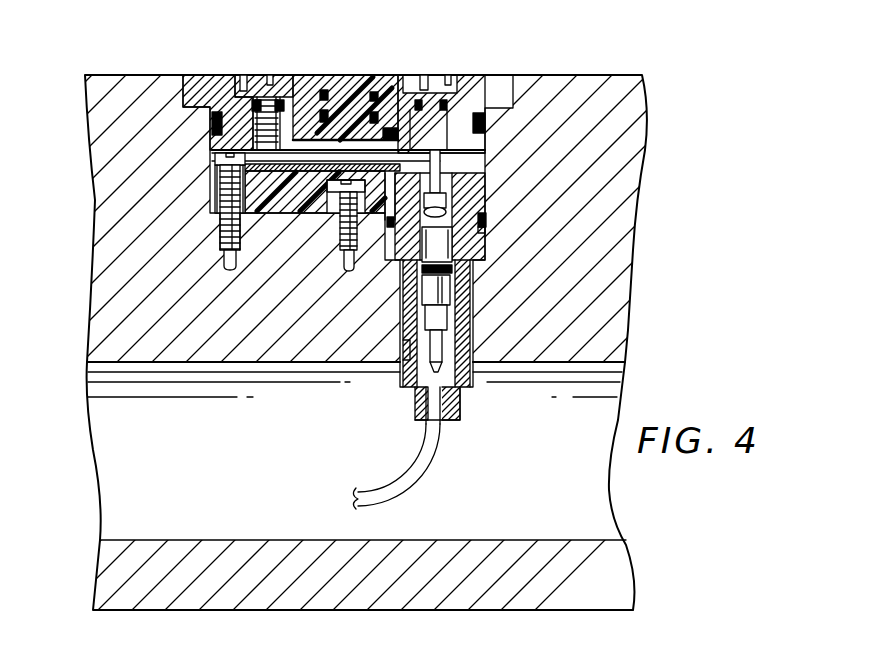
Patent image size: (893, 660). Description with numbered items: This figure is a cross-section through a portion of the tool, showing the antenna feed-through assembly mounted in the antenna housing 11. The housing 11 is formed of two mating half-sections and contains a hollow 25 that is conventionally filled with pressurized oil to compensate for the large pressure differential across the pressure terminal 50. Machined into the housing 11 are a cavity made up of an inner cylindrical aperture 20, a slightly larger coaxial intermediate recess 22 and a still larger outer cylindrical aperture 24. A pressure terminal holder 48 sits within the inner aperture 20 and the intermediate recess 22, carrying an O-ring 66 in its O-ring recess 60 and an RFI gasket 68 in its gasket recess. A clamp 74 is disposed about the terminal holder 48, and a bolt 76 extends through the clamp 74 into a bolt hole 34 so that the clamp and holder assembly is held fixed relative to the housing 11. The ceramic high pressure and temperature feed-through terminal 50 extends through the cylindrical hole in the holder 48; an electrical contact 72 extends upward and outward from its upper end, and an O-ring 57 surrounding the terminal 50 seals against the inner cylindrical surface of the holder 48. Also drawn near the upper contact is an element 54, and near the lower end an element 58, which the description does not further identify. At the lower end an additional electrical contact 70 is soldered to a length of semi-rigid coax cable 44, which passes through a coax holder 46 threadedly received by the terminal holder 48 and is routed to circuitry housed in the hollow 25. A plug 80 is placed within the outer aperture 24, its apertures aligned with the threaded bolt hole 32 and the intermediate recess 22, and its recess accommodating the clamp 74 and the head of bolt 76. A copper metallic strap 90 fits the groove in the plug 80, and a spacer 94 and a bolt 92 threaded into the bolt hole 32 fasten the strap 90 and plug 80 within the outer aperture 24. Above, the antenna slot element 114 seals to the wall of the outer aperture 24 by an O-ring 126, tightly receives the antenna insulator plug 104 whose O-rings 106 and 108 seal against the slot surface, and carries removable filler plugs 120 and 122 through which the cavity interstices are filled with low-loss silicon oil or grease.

The antenna housing 11 is at (569, 88).
The inner cylindrical aperture 20 is at (458, 292).
The intermediate recess 22 is at (398, 262).
The outer cylindrical aperture 24 is at (487, 148).
The hollow 25 is at (583, 487).
The threaded bolt hole 32 is at (221, 266).
The bolt hole 34 is at (362, 237).
The semi-rigid coax cable 44 is at (390, 466).
The coax holder 46 is at (460, 415).
The pressure terminal holder 48 is at (458, 315).
The pressure terminal 50 is at (447, 237).
The connector 54 is at (447, 200).
The O-ring 57 is at (452, 267).
The nut 58 is at (417, 406).
The O-ring recess 60 is at (488, 222).
The O-ring 66 is at (490, 216).
The RFI gasket 68 is at (462, 333).
The electrical contact 70 is at (424, 368).
The electrical contact 72 is at (440, 167).
The clamp 74 is at (327, 208).
The bolt 76 is at (343, 240).
The plug 80 is at (288, 206).
The metallic strap 90 is at (213, 172).
The bolt 92 is at (219, 226).
The spacer 94 is at (217, 198).
The antenna insulator plug 104 is at (328, 78).
The O-ring 106 is at (365, 118).
The O-ring 108 is at (388, 125).
The antenna slot element 114 is at (197, 82).
The filler plug 120 is at (247, 80).
The filler plug 122 is at (450, 80).
The O-ring 126 is at (210, 123).